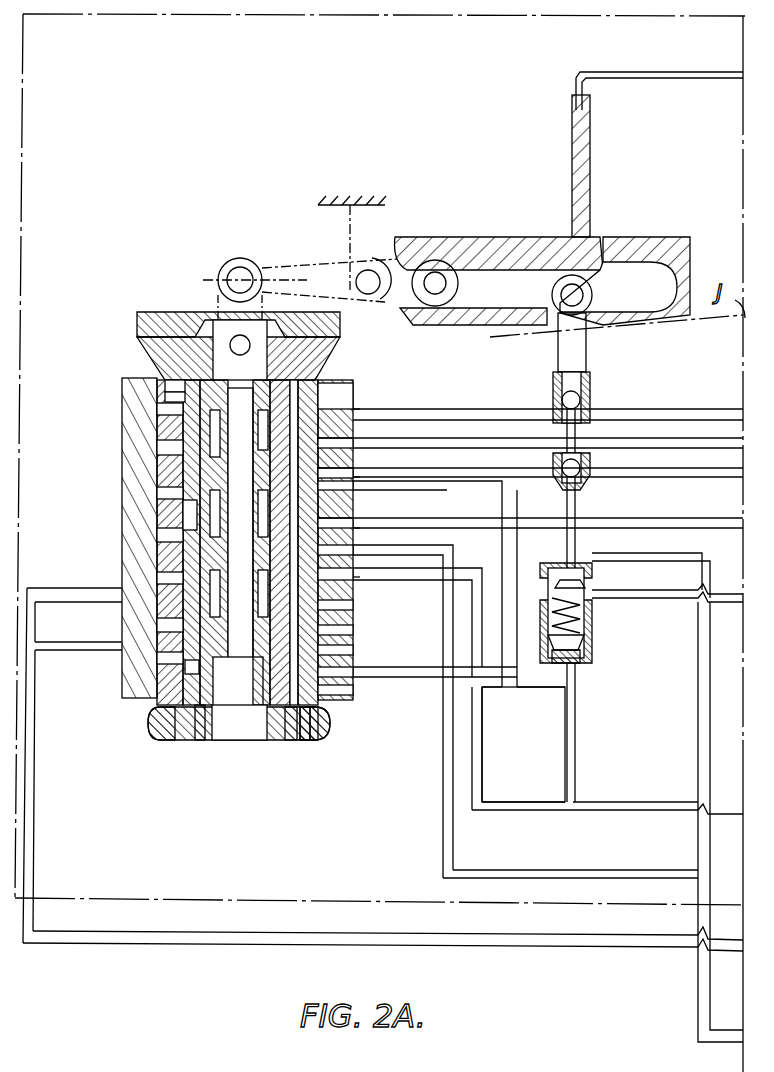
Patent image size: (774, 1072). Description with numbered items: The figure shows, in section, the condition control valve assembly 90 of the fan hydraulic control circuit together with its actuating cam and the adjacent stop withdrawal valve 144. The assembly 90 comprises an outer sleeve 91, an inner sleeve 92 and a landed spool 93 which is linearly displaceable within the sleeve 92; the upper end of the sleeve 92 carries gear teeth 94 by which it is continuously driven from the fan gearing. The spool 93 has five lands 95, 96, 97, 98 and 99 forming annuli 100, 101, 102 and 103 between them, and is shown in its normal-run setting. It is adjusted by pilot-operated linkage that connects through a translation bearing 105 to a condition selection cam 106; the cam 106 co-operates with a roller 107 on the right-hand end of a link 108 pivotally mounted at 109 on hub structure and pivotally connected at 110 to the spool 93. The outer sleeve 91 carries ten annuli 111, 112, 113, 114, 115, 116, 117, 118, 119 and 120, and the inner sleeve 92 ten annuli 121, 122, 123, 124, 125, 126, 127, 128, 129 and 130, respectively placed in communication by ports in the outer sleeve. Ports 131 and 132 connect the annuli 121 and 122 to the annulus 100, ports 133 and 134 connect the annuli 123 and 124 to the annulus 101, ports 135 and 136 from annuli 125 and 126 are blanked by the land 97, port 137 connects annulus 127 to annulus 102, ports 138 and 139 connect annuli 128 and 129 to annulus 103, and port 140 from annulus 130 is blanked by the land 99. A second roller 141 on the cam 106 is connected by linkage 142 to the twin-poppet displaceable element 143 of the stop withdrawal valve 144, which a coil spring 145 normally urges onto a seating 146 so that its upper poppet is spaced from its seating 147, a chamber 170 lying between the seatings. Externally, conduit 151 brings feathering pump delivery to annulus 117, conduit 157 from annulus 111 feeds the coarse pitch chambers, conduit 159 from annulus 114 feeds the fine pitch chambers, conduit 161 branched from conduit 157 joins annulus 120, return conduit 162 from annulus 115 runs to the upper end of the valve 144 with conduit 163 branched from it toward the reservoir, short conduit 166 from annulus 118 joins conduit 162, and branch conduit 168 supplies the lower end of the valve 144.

The condition control valve assembly 90 is at (240, 744).
The outer sleeve 91 is at (160, 722).
The inner sleeve 92 is at (318, 742).
The landed spool 93 is at (190, 708).
The gear teeth 94 is at (332, 318).
The land 95 is at (188, 340).
The land 96 is at (190, 470).
The land 97 is at (185, 560).
The land 98 is at (122, 614).
The land 99 is at (203, 742).
The annulus 100 is at (140, 420).
The annulus 101 is at (168, 510).
The annulus 102 is at (122, 592).
The annulus 103 is at (239, 547).
The translation bearing 105 is at (575, 105).
The condition selection cam 106 is at (523, 242).
The roller 107 is at (437, 280).
The link 108 is at (280, 283).
The pivot 109 is at (358, 272).
The pivotal connection 110 is at (233, 276).
The annulus 111 is at (340, 396).
The annulus 112 is at (352, 418).
The annulus 113 is at (356, 470).
The annulus 114 is at (530, 515).
The annulus 115 is at (350, 525).
The annulus 116 is at (350, 572).
The annulus 117 is at (350, 630).
The annulus 118 is at (335, 660).
The annulus 119 is at (330, 675).
The annulus 120 is at (325, 690).
The annulus 121 is at (318, 392).
The annulus 122 is at (335, 420).
The annulus 123 is at (330, 445).
The annulus 124 is at (417, 583).
The annulus 125 is at (330, 530).
The annulus 126 is at (330, 580).
The annulus 127 is at (330, 625).
The annulus 128 is at (325, 738).
The annulus 129 is at (330, 735).
The annulus 130 is at (292, 742).
The port 131 is at (160, 372).
The port 132 is at (170, 400).
The port 133 is at (165, 450).
The port 134 is at (165, 485).
The port 135 is at (165, 520).
The port 136 is at (165, 555).
The port 137 is at (165, 580).
The port 138 is at (165, 628).
The port 139 is at (165, 656).
The port 140 is at (188, 672).
The roller 141 is at (578, 310).
The linkage 142 is at (591, 388).
The twin-poppet displaceable element 143 is at (594, 574).
The stop withdrawal valve 144 is at (586, 638).
The coil spring 145 is at (582, 618).
The seating 146 is at (582, 655).
The seating 147 is at (590, 565).
The conduit 151 is at (40, 742).
The conduit 157 is at (500, 420).
The conduit 159 is at (654, 527).
The conduit 161 is at (540, 690).
The return conduit 162 is at (490, 556).
The conduit 163 is at (700, 898).
The short conduit 166 is at (478, 680).
The branch conduit 168 is at (576, 708).
The chamber 170 is at (545, 700).